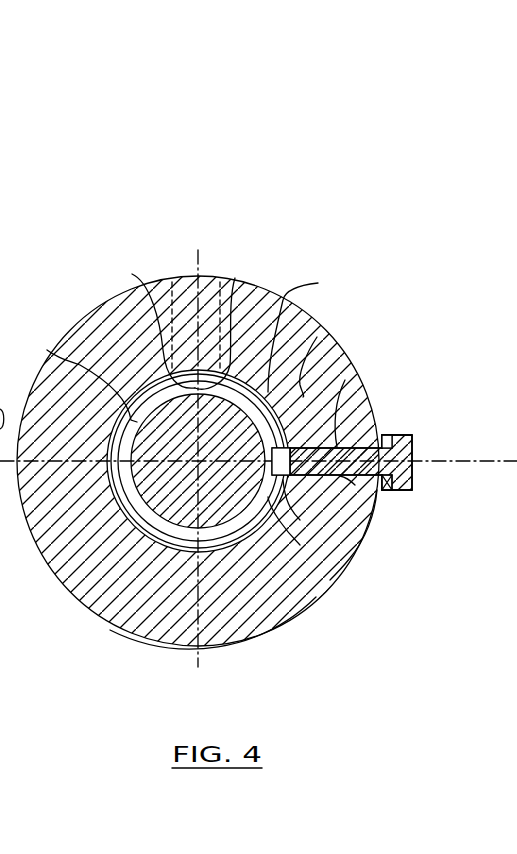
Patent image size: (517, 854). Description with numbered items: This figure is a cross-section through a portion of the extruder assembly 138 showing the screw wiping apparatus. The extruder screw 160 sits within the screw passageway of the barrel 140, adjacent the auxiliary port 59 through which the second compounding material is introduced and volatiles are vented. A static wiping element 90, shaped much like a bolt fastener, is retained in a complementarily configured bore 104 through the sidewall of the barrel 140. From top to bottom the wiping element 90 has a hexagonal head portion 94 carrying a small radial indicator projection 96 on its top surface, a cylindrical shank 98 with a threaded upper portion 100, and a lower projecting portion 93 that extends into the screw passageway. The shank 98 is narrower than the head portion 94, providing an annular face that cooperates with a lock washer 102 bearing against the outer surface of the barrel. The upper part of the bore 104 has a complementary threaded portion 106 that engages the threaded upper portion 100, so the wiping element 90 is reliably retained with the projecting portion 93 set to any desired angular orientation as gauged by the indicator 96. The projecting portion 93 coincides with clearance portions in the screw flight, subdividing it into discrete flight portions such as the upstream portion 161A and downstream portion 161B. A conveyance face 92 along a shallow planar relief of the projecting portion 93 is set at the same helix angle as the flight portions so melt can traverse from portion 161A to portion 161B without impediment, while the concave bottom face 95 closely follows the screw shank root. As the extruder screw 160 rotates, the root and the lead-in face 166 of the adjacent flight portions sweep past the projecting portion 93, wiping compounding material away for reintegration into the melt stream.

The extruder assembly 138 is at (209, 190).
The auxiliary port 59 is at (173, 282).
The screw flight portion 161B is at (235, 278).
The barrel 140 is at (318, 283).
The lead-in face 166 is at (47, 350).
The extruder screw 160 is at (305, 313).
The projecting portion 93 is at (317, 337).
The bore 104 is at (345, 380).
The threaded portion 106 is at (392, 435).
The hexagonal head portion 94 is at (411, 435).
The wiping element 90 is at (420, 453).
The radial indicator projection 96 is at (413, 483).
The lock washer 102 is at (410, 493).
The cylindrical shank 98 is at (387, 490).
The threaded upper portion 100 is at (393, 491).
The conveyance face 92 is at (355, 485).
The bottom face 95 is at (300, 520).
The screw flight portion 161A is at (316, 597).